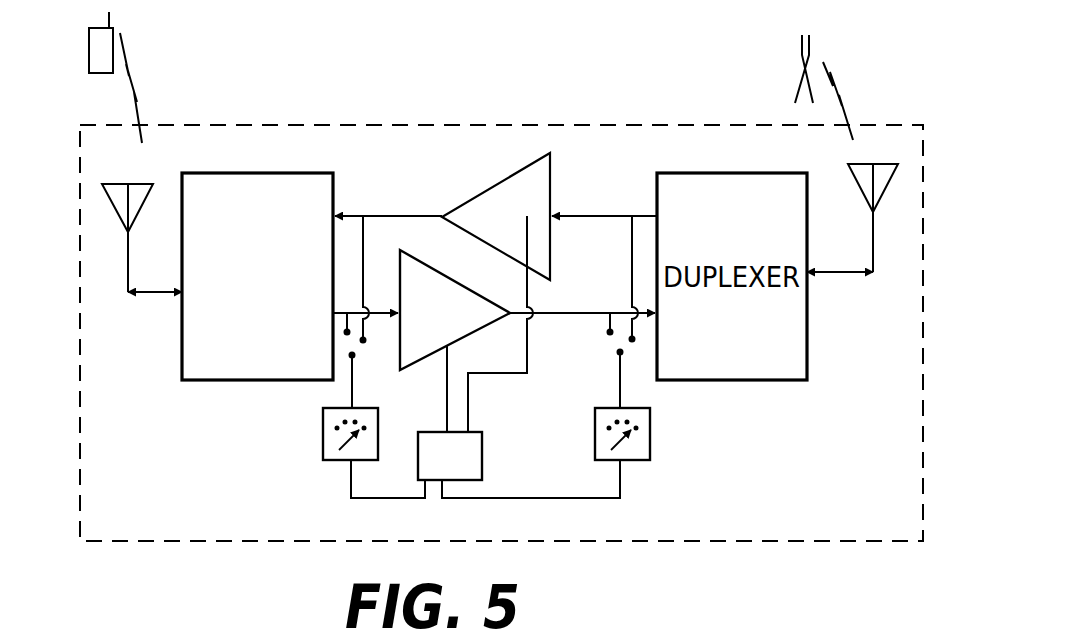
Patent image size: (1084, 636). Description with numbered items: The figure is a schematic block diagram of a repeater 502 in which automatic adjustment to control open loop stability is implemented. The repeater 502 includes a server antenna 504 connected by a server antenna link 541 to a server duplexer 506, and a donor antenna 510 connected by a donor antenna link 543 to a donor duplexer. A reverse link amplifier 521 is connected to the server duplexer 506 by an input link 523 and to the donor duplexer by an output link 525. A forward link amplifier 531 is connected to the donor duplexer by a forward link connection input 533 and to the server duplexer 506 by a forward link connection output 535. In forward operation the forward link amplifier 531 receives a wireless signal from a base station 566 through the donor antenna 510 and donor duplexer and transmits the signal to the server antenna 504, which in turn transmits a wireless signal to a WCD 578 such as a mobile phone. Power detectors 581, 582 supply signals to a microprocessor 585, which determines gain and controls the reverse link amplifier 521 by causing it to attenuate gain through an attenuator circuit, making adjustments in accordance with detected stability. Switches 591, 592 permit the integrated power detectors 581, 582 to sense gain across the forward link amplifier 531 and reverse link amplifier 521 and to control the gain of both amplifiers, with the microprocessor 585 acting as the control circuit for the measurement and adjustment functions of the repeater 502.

The repeater 502 is at (204, 558).
The server antenna 504 is at (128, 265).
The server duplexer 506 is at (262, 173).
The donor antenna 510 is at (873, 236).
The reverse link amplifier 521 is at (470, 283).
The input link 523 is at (338, 313).
The output link 525 is at (556, 313).
The forward link amplifier 531 is at (524, 164).
The forward link connection input 533 is at (598, 213).
The forward link connection output 535 is at (400, 212).
The server antenna link 541 is at (168, 294).
The donor antenna link 543 is at (838, 275).
The base station 566 is at (800, 78).
The WCD 578 is at (109, 74).
The power detector 581 is at (323, 438).
The power detector 582 is at (652, 455).
The microprocessor 585 is at (482, 460).
The switch 591 is at (354, 354).
The switch 592 is at (618, 350).